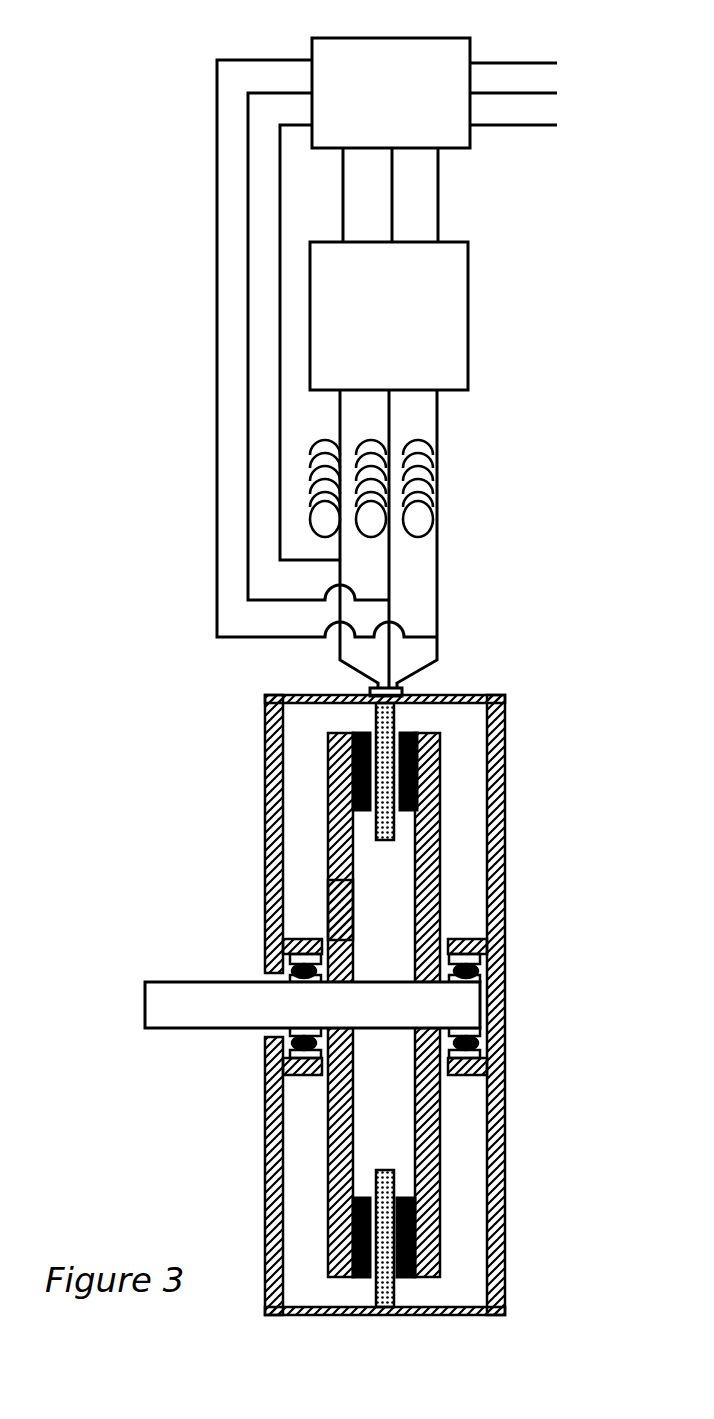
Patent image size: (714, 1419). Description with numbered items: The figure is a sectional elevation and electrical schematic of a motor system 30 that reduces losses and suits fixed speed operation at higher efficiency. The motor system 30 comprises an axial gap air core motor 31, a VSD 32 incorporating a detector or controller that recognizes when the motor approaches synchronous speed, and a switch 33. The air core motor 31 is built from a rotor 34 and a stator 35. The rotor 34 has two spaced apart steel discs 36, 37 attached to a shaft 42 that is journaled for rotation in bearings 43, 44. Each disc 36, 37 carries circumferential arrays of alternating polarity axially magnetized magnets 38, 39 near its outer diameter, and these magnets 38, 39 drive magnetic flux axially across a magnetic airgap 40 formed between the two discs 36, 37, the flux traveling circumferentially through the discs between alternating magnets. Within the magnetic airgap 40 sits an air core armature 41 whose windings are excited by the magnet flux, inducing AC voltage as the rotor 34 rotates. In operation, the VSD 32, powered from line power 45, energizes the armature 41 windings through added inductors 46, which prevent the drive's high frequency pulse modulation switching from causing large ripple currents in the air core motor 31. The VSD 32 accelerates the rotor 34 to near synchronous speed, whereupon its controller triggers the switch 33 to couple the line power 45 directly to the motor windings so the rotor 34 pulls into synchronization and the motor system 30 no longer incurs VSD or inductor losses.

The motor system 30 is at (98, 44).
The axial gap air core motor 31 is at (180, 806).
The VSD 32 is at (470, 312).
The switch 33 is at (436, 38).
The rotor 34 is at (321, 912).
The stator 35 is at (384, 1158).
The steel disc 36 is at (440, 887).
The steel disc 37 is at (353, 917).
The magnets 38 is at (412, 737).
The magnets 39 is at (353, 737).
The magnetic airgap 40 is at (400, 1292).
The air core armature 41 is at (372, 1292).
The shaft 42 is at (196, 982).
The bearing 43 is at (500, 968).
The bearing 44 is at (290, 957).
The line power 45 is at (578, 97).
The inductors 46 is at (437, 477).